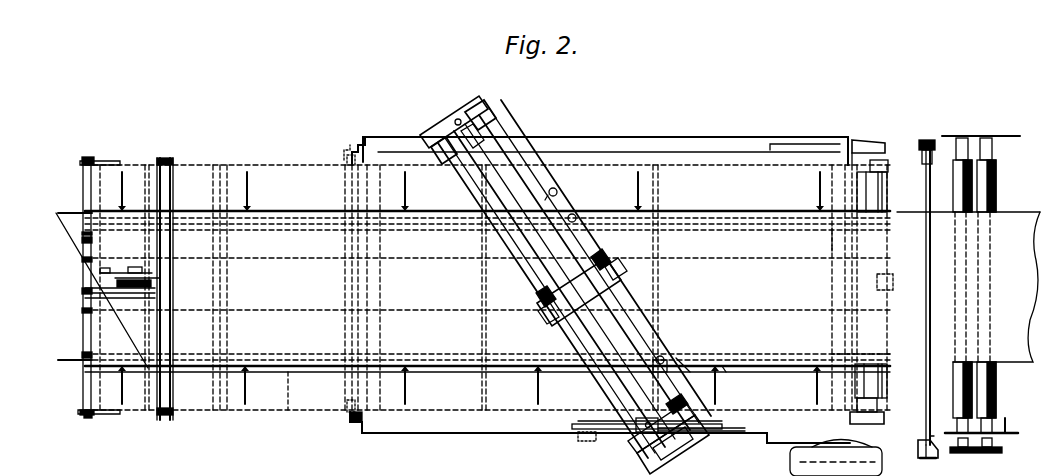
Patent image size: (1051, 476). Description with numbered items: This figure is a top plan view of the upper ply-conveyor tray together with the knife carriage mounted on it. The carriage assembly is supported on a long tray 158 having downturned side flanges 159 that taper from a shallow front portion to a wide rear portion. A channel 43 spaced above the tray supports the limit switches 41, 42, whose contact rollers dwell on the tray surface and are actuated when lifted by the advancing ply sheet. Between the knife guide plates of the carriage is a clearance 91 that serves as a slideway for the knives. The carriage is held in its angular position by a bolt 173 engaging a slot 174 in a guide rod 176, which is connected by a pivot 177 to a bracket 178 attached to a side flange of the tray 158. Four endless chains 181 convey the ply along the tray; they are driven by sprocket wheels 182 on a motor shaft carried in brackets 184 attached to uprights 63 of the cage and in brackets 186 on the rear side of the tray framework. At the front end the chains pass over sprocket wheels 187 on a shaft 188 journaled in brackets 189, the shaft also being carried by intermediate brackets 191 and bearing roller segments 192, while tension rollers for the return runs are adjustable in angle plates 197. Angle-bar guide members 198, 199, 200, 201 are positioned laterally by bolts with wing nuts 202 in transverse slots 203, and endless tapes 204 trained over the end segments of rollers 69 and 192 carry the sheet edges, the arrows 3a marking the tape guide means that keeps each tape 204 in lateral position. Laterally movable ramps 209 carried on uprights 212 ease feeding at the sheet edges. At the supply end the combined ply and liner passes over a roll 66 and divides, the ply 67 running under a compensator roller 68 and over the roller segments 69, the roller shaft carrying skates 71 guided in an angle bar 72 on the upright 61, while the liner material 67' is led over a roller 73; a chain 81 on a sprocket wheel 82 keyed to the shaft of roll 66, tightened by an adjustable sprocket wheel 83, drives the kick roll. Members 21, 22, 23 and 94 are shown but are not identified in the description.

The frame member 21 is at (348, 167).
The bracket 22 is at (361, 147).
The bracket leg 23 is at (356, 420).
The limit switch 41 is at (140, 302).
The limit switch 42 is at (130, 268).
The channel 43 is at (168, 182).
The upright 61 is at (927, 448).
The upright 63 is at (849, 137).
The roll 66 is at (931, 453).
The ply 67 is at (968, 205).
The liner material 67' is at (996, 270).
The compensator roller 68 is at (925, 386).
The roller segments 69 is at (887, 192).
The skates 71 is at (916, 428).
The angle bar 72 is at (932, 436).
The roller 73 is at (995, 394).
The chain 81 is at (976, 454).
The sprocket wheel 82 is at (962, 454).
The adjustable sprocket wheel 83 is at (985, 452).
The clearance 91 is at (508, 200).
The inclined rail 94 is at (492, 140).
The tray 158 is at (290, 402).
The downturned side flanges 159 is at (238, 412).
The bolt 173 is at (672, 456).
The slot 174 is at (596, 431).
The guide rod 176 is at (548, 432).
The pivot 177 is at (440, 432).
The bracket 178 is at (462, 430).
The endless chains 181 is at (100, 350).
The sprocket wheels 182 is at (876, 353).
The brackets 184 is at (856, 146).
The brackets 186 is at (880, 168).
The sprocket wheels 187 is at (80, 234).
The shaft 188 is at (80, 412).
The brackets 189 is at (100, 163).
The brackets 191 is at (82, 241).
The roller segments 192 is at (82, 302).
The angle plates 197 is at (832, 254).
The angle-bar guide member 198 is at (273, 208).
The angle-bar guide member 199 is at (605, 165).
The angle-bar guide member 200 is at (286, 372).
The angle-bar guide member 201 is at (683, 372).
The bolts with wing nuts 202 is at (738, 379).
The slots 203 is at (250, 190).
The endless tapes 204 is at (76, 212).
The laterally movable ramps 209 is at (578, 222).
The upright 212 is at (558, 193).
The section line 3a is at (848, 334).